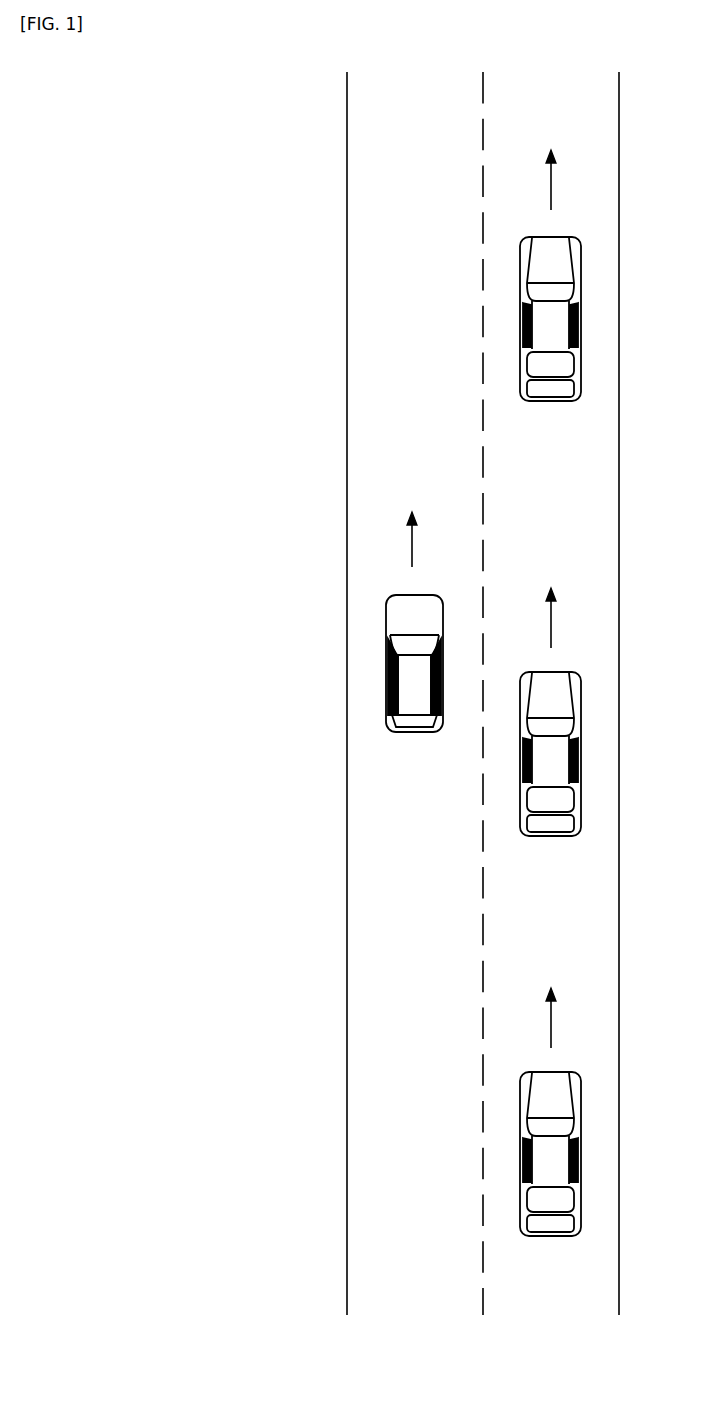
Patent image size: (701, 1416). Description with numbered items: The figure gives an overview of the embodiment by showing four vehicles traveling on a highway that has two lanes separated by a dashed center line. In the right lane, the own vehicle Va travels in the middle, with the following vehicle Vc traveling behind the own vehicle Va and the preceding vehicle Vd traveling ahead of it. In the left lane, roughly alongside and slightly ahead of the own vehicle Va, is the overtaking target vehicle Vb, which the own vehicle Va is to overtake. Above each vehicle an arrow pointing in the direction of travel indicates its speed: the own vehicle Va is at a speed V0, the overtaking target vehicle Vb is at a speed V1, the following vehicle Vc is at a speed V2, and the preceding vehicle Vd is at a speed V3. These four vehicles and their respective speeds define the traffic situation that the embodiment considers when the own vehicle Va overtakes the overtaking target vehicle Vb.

The own vehicle Va is at (551, 672).
The overtaking target vehicle Vb is at (418, 595).
The following vehicle Vc is at (551, 1072).
The preceding vehicle Vd is at (551, 237).
The speed of own vehicle V0 is at (561, 618).
The speed of overtaking target vehicle V1 is at (422, 539).
The speed of following vehicle V2 is at (561, 1018).
The speed of preceding vehicle V3 is at (561, 180).